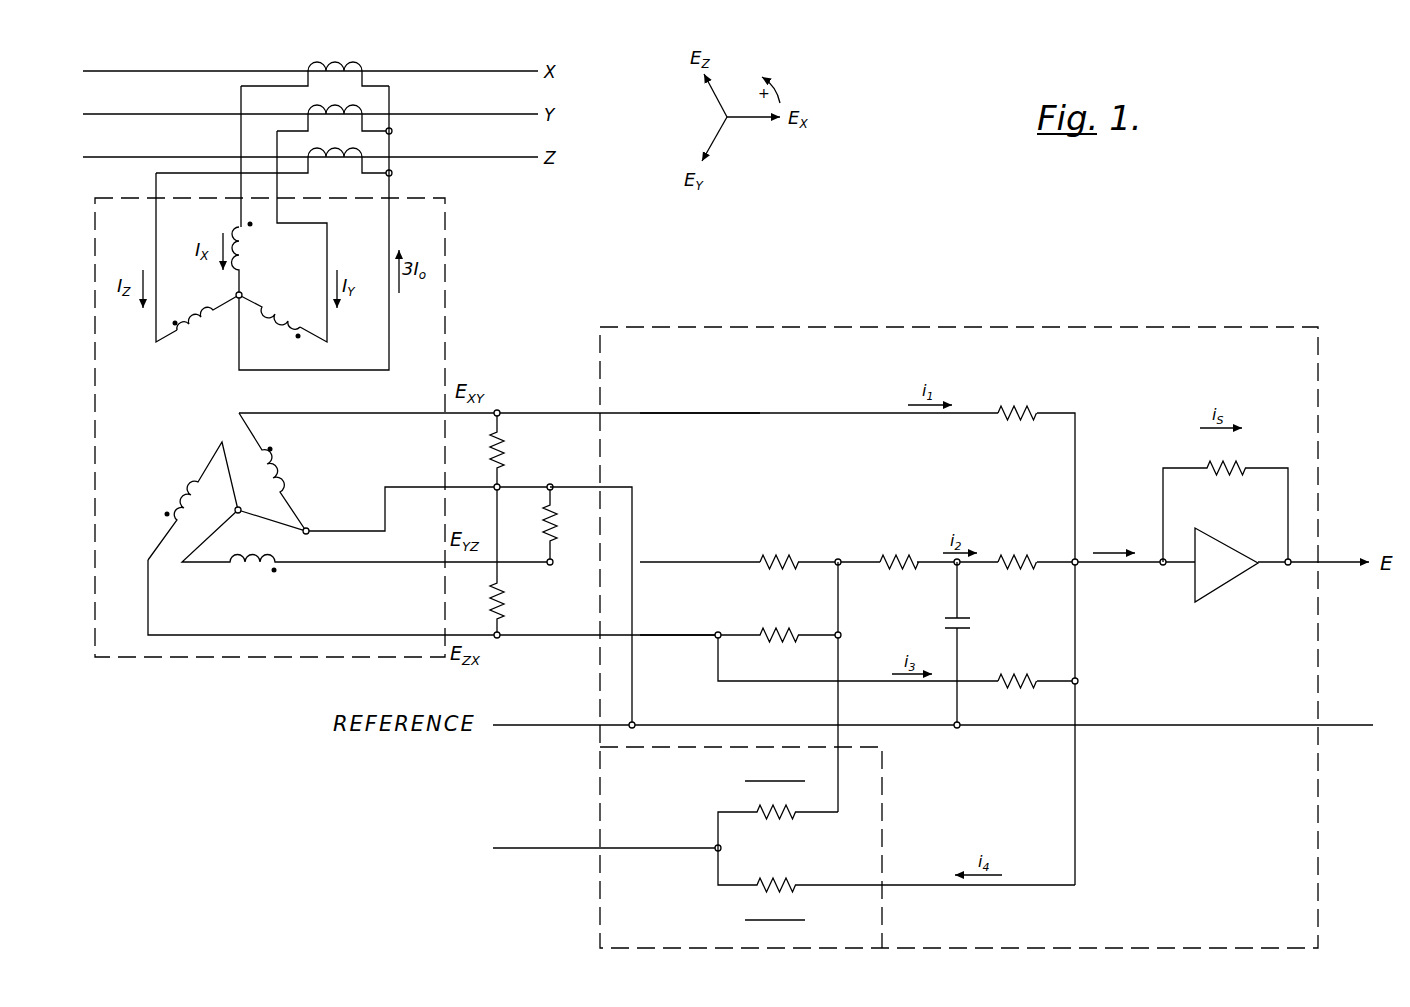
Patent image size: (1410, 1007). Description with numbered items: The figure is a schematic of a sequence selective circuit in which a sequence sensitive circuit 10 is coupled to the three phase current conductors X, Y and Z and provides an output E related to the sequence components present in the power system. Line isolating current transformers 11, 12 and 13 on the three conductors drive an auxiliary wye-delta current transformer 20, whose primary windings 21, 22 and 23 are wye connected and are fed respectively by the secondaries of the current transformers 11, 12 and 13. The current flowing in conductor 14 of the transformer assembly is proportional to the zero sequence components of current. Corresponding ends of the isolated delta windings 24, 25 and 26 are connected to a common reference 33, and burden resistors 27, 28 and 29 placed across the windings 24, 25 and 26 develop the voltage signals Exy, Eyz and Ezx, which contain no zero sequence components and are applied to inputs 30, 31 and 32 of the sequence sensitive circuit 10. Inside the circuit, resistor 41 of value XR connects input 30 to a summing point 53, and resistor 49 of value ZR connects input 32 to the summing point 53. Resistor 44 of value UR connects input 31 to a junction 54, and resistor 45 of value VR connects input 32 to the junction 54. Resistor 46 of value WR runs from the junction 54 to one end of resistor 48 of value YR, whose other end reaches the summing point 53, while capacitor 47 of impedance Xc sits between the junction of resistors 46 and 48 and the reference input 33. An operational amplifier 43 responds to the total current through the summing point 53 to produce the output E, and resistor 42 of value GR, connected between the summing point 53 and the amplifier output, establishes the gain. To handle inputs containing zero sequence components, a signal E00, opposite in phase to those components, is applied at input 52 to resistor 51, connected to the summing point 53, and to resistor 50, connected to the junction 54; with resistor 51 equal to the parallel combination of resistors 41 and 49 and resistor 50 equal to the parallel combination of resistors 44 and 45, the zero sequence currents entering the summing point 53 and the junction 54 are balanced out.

The sequence sensitive circuit 10 is at (865, 362).
The line isolating current transformer 11 is at (362, 64).
The line isolating current transformer 12 is at (374, 100).
The line isolating current transformer 13 is at (374, 143).
The conductor 14 is at (292, 228).
The auxiliary wye-delta current transformer 20 is at (133, 413).
The primary winding 21 is at (244, 254).
The primary winding 22 is at (277, 327).
The primary winding 23 is at (190, 330).
The isolated delta winding 24 is at (280, 467).
The isolated delta winding 25 is at (245, 565).
The isolated delta winding 26 is at (187, 490).
The burden resistor 27 is at (510, 448).
The burden resistor 28 is at (557, 522).
The burden resistor 29 is at (510, 600).
The input 30 is at (677, 415).
The input 31 is at (673, 565).
The input 32 is at (673, 640).
The common reference 33 is at (557, 728).
The resistor 41 is at (1023, 422).
The resistor 42 is at (1228, 473).
The operational amplifier 43 is at (1237, 582).
The resistor 44 is at (785, 567).
The resistor 45 is at (788, 648).
The resistor 46 is at (888, 570).
The capacitor 47 is at (970, 625).
The resistor 48 is at (1023, 570).
The resistor 49 is at (1023, 689).
The resistor 50 is at (795, 818).
The resistor 51 is at (795, 878).
The input 52 is at (560, 851).
The summing point 53 is at (1130, 565).
The junction 54 is at (840, 558).